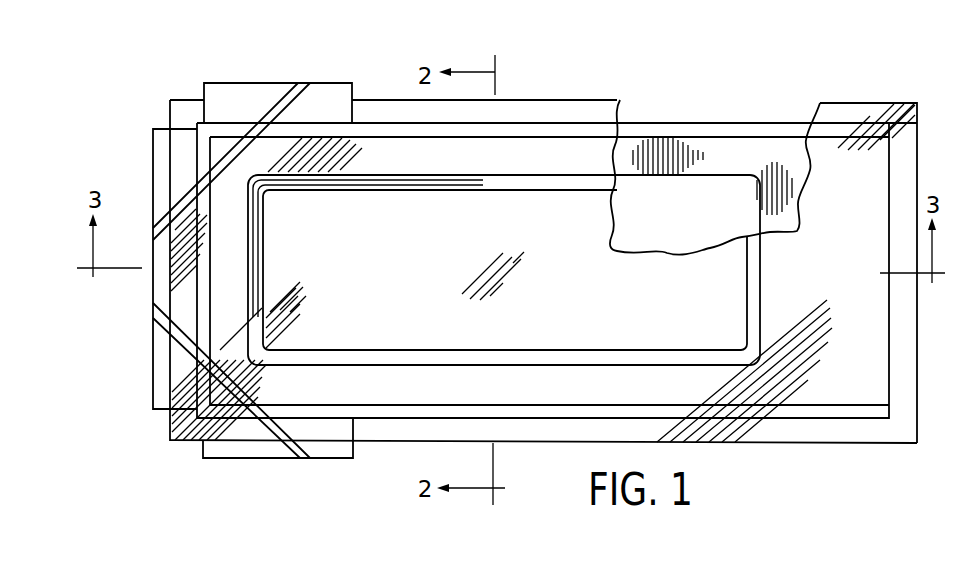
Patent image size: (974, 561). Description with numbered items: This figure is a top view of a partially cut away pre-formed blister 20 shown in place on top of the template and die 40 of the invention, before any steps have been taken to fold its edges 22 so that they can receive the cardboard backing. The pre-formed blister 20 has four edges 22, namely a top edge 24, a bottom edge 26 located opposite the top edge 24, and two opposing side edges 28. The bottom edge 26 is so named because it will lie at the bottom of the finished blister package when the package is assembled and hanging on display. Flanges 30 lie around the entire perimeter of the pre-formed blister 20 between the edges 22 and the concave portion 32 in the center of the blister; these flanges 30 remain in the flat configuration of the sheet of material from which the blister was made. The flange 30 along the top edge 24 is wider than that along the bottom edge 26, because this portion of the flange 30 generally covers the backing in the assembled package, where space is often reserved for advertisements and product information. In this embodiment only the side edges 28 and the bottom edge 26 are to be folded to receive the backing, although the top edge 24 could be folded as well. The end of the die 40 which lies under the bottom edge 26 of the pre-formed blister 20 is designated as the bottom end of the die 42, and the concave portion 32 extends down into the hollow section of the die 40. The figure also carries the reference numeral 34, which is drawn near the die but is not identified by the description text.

The pre-formed blister 20 is at (925, 421).
The edges 22 is at (830, 103).
The top edge 24 is at (917, 363).
The bottom edge 26 is at (170, 363).
The side edges 28 is at (520, 101).
The flanges 30 is at (822, 233).
The concave portion 32 is at (362, 288).
The tab 34 is at (182, 140).
The die 40 is at (706, 110).
The bottom end of the die 42 is at (193, 289).